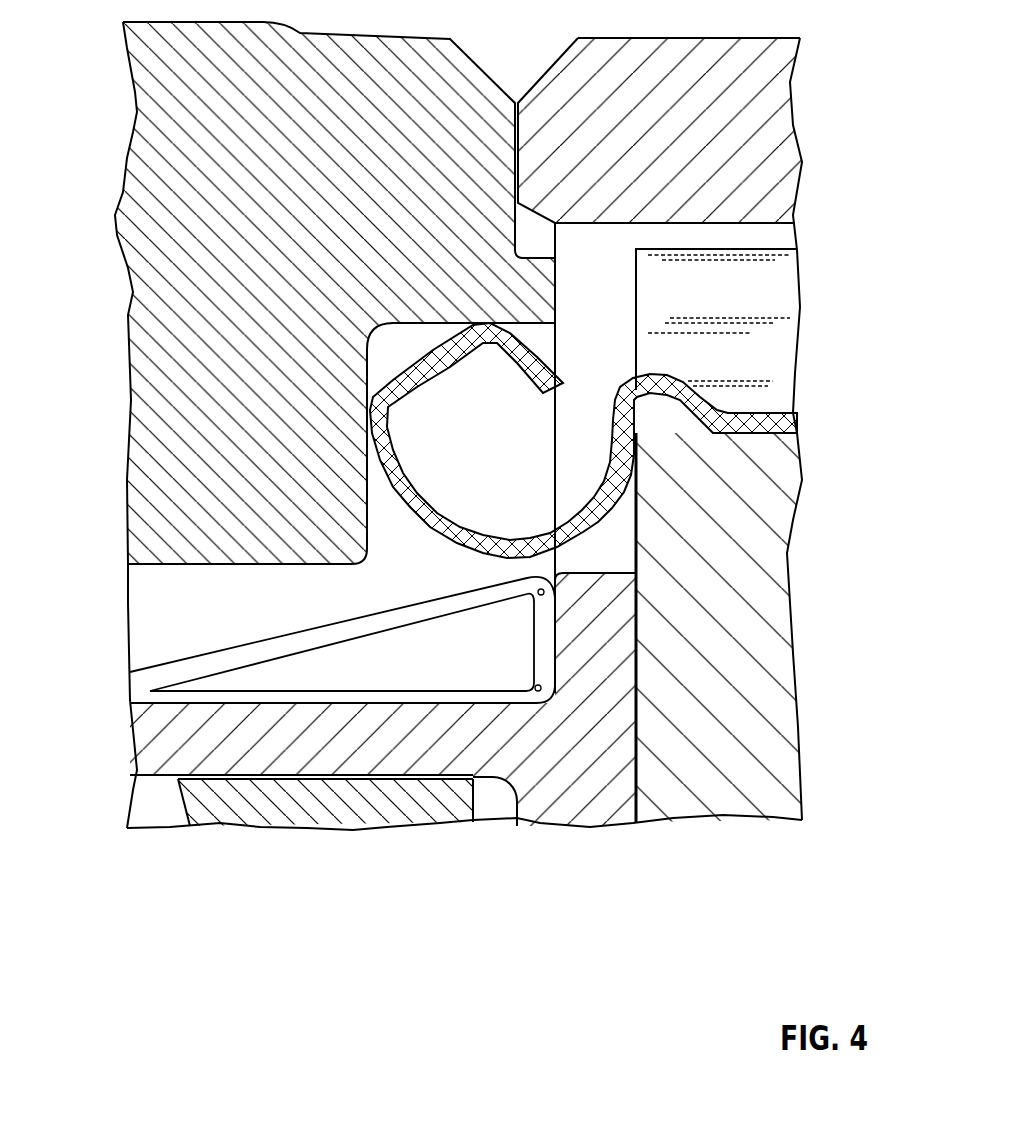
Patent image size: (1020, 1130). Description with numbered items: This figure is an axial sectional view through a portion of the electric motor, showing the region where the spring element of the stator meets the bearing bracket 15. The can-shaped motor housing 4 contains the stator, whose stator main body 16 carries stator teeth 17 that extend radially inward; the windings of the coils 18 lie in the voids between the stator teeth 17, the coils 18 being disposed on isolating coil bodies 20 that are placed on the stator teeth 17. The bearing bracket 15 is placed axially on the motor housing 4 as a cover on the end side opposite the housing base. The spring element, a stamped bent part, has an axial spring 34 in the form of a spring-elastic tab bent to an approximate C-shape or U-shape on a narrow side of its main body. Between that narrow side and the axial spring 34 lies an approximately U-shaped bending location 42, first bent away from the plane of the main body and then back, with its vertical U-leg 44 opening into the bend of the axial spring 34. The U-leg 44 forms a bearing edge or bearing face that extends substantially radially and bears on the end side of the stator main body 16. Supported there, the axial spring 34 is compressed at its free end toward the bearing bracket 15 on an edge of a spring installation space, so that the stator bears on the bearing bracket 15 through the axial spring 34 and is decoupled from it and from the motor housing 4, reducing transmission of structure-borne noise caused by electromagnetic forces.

The motor housing 4 is at (685, 142).
The bearing bracket 15 is at (257, 168).
The stator main body 16 is at (768, 627).
The stator teeth 17 is at (707, 632).
The coils 18 is at (332, 802).
The coil bodies 20 is at (230, 747).
The axial spring 34 is at (447, 523).
The bending location 42 is at (710, 398).
The U-leg 44 is at (638, 453).